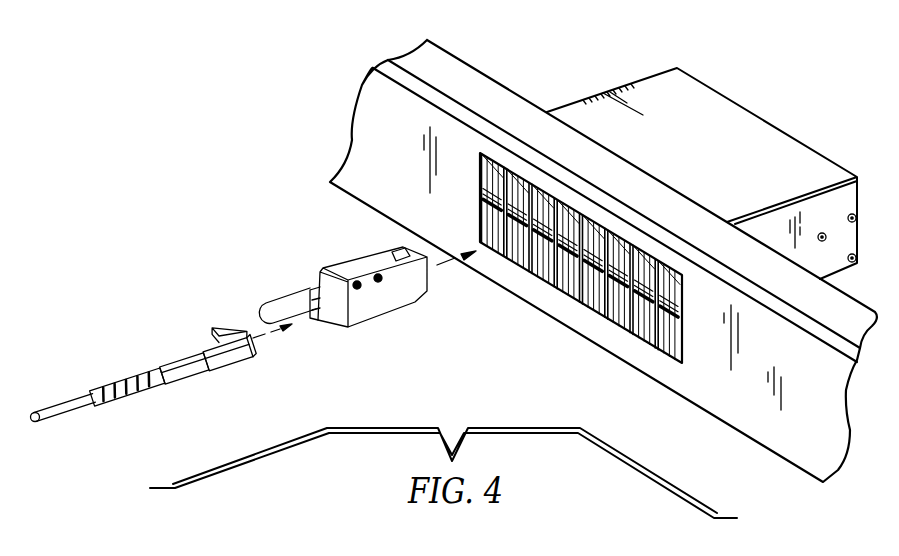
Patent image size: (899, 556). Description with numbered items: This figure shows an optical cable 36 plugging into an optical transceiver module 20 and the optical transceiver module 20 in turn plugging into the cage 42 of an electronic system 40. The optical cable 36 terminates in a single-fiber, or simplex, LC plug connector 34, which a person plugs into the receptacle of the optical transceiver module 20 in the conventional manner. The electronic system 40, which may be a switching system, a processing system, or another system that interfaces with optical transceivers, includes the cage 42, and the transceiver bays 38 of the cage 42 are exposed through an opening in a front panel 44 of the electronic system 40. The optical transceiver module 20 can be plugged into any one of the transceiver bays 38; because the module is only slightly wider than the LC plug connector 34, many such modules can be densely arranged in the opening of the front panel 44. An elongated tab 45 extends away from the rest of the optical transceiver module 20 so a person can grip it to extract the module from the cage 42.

The optical transceiver module 20 is at (374, 311).
The LC plug connector 34 is at (185, 357).
The optical cable 36 is at (254, 336).
The transceiver bays 38 is at (485, 250).
The electronic system 40 is at (603, 256).
The cage 42 is at (700, 85).
The front panel 44 is at (690, 400).
The elongated tab 45 is at (282, 298).